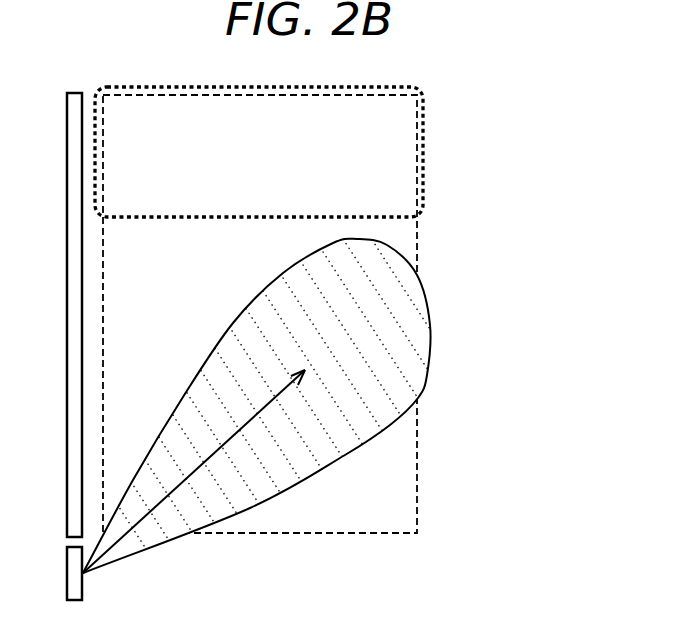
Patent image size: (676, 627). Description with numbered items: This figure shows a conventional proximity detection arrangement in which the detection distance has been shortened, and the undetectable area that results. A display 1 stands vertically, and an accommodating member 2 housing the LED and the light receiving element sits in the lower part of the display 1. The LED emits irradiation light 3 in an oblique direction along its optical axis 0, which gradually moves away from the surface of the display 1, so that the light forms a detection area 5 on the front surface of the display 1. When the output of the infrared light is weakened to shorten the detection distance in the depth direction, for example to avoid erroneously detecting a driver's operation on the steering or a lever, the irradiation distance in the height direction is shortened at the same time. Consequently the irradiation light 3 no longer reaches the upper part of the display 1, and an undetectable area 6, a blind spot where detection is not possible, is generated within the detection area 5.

The display 1 is at (64, 316).
The accommodating member 2 is at (63, 573).
The irradiation light 3 is at (432, 320).
The detection area 5 is at (419, 518).
The undetectable area (blind spot) 6 is at (425, 150).
The optical axis 0 is at (203, 462).